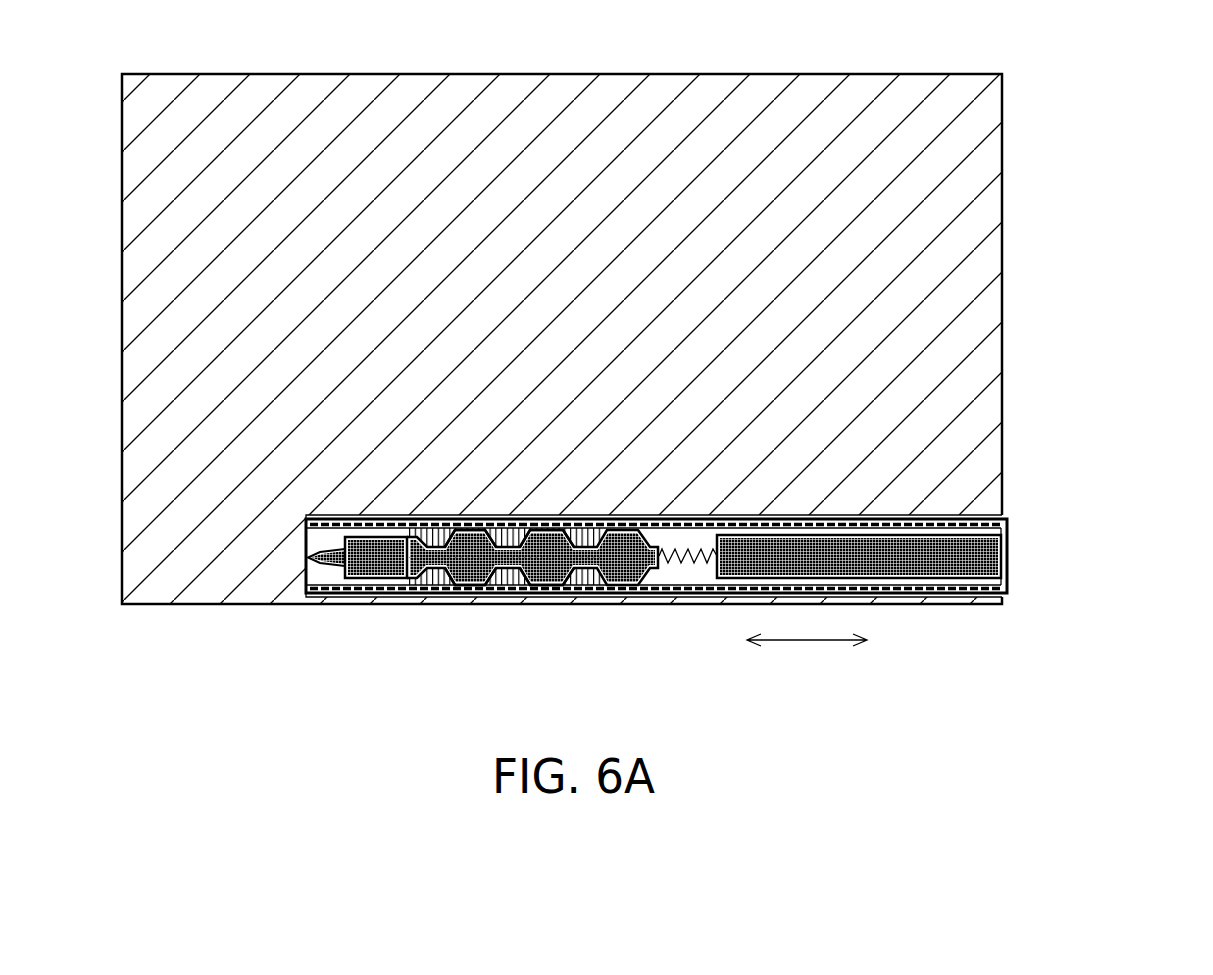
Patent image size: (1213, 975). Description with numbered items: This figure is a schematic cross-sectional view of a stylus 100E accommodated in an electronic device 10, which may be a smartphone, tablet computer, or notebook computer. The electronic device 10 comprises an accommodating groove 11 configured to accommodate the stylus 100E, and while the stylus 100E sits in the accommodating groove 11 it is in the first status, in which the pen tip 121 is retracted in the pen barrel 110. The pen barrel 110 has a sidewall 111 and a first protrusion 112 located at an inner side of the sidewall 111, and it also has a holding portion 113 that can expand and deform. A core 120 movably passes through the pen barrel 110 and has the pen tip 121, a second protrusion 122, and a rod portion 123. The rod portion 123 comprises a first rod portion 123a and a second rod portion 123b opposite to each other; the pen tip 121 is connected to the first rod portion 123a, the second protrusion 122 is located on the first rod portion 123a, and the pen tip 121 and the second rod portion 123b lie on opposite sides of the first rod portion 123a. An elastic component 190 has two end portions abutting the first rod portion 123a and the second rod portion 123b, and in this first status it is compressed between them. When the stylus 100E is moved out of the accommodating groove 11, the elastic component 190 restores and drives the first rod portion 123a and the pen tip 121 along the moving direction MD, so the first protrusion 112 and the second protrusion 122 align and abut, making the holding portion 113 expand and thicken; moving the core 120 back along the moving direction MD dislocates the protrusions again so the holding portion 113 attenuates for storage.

The electronic device 10 is at (832, 112).
The accommodating groove 11 is at (808, 514).
The stylus 100E is at (1051, 559).
The pen barrel 110 is at (547, 594).
The sidewall 111 is at (627, 527).
The first protrusion 112 is at (434, 538).
The holding portion 113 is at (473, 591).
The core 120 is at (652, 573).
The pen tip 121 is at (336, 556).
The second protrusion 122 is at (470, 545).
The rod portion 123 is at (683, 602).
The first rod portion 123a is at (430, 562).
The second rod portion 123b is at (957, 557).
The elastic component 190 is at (685, 553).
The moving direction MD is at (807, 659).